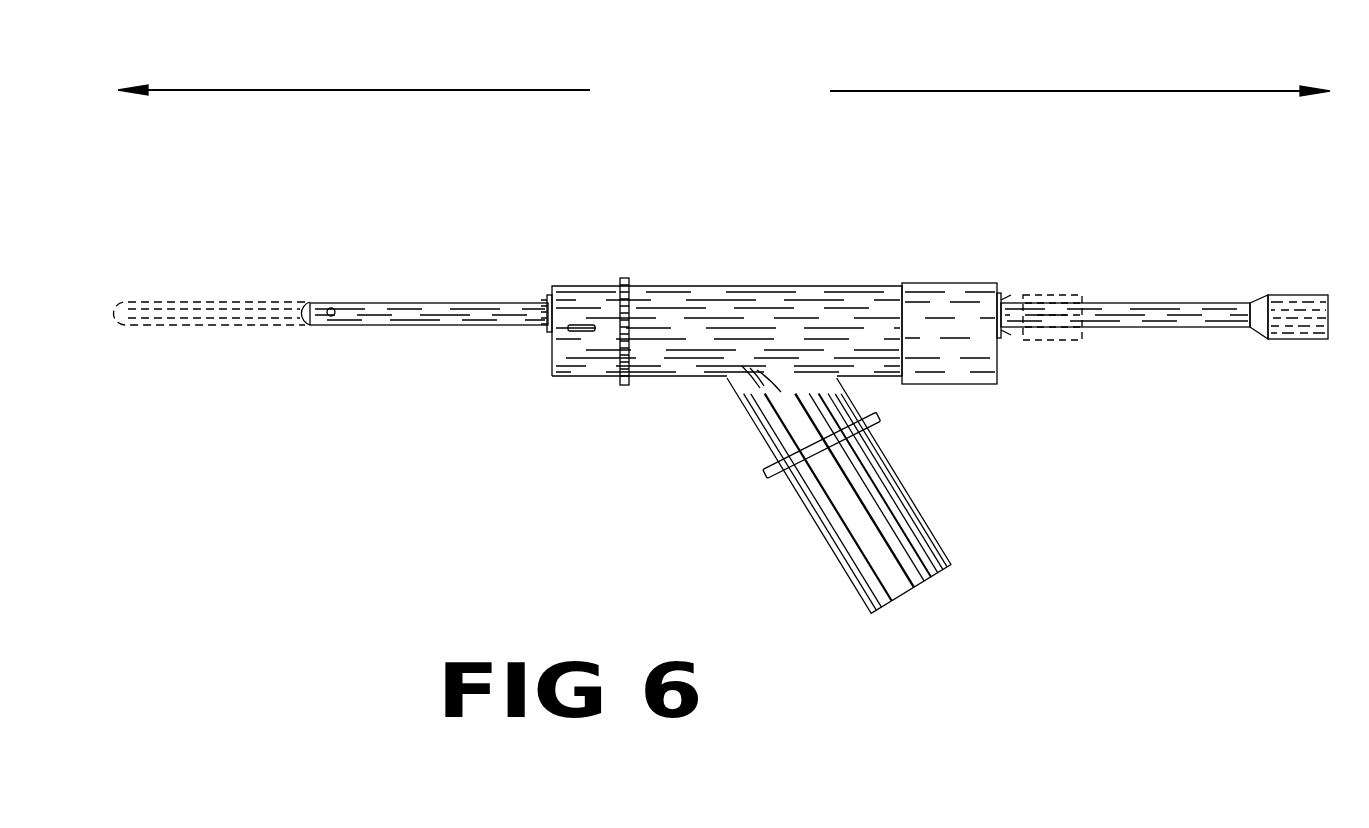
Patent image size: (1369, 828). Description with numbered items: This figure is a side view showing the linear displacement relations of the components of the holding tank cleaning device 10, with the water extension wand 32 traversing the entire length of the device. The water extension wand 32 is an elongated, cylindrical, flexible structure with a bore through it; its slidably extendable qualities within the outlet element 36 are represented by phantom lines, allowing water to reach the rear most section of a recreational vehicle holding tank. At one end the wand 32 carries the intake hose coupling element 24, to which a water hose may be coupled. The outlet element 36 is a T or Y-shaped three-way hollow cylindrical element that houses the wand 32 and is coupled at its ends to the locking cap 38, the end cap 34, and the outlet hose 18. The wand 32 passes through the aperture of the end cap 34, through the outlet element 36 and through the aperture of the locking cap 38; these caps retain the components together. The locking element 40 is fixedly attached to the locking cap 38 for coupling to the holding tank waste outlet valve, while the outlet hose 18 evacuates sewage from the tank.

The holding tank cleaning device 10 is at (970, 510).
The outlet hose 18 is at (873, 558).
The intake hose coupling element 24 is at (1330, 310).
The water extension wand 32 is at (482, 320).
The end cap 34 is at (942, 383).
The outlet element 36 is at (808, 286).
The locking cap 38 is at (602, 358).
The locking element 40 is at (582, 332).